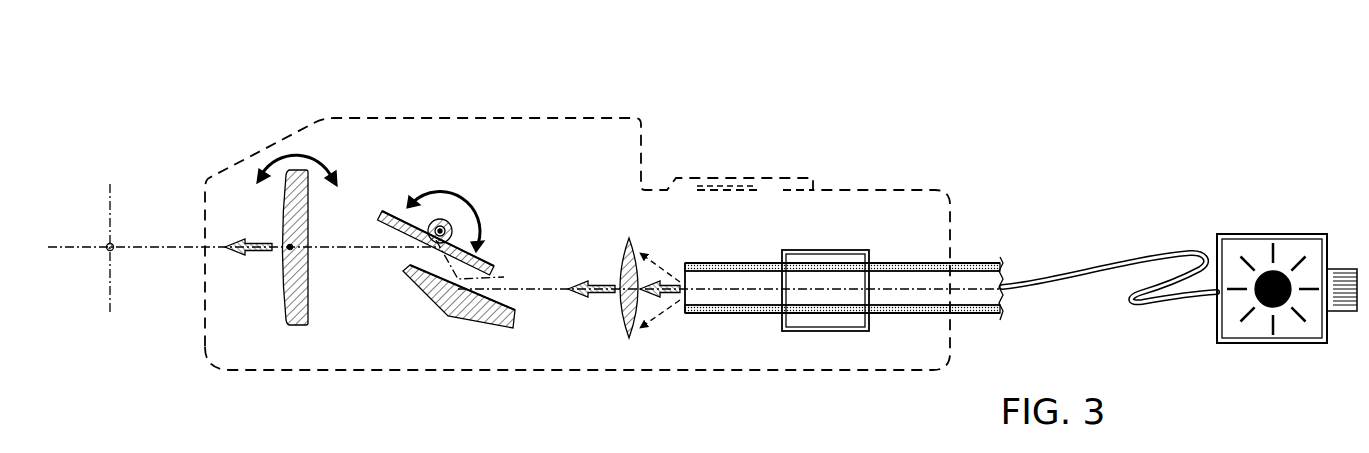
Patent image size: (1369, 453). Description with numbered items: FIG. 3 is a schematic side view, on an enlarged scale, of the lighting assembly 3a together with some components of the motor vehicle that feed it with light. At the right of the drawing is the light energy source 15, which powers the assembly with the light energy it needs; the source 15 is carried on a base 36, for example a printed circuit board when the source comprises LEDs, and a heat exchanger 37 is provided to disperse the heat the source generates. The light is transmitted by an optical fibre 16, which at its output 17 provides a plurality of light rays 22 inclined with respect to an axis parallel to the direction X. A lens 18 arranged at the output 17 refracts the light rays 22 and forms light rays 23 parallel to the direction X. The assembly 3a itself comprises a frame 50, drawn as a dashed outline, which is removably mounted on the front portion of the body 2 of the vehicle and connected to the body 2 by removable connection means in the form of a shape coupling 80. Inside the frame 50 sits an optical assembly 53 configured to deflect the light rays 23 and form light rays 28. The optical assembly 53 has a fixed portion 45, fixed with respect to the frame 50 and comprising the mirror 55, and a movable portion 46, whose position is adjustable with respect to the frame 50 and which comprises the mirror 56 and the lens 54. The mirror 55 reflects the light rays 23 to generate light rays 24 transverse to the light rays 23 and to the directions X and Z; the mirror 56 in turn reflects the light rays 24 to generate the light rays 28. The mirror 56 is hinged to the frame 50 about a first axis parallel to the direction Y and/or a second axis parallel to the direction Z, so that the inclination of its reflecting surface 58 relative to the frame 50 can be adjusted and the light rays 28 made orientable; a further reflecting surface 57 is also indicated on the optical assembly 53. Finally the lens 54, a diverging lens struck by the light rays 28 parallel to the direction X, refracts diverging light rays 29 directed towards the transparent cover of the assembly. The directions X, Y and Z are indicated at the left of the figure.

The body 2 is at (885, 179).
The lighting assembly 3a is at (665, 151).
The light energy source 15 is at (1288, 247).
The optical fibre 16 is at (823, 242).
The output of the optical fibre 17 is at (678, 265).
The lens 18 is at (625, 332).
The light rays 22 is at (655, 323).
The light rays 23 is at (593, 297).
The light rays 24 is at (504, 277).
The light rays 28 is at (329, 246).
The light rays 29 is at (256, 241).
The base 36 is at (1308, 346).
The heat exchanger 37 is at (1326, 267).
The fixed portion 45 is at (447, 321).
The movable portion 46 is at (322, 108).
The frame 50 is at (555, 111).
The optical assembly 53 is at (460, 183).
The lens 54 is at (288, 298).
The mirror 55 is at (503, 328).
The mirror 56 is at (397, 212).
The reflecting surface 57 is at (514, 302).
The reflecting surface 58 is at (382, 229).
The shape coupling 80 is at (735, 158).
The direction X is at (78, 252).
The direction Y is at (120, 256).
The direction Z is at (114, 213).